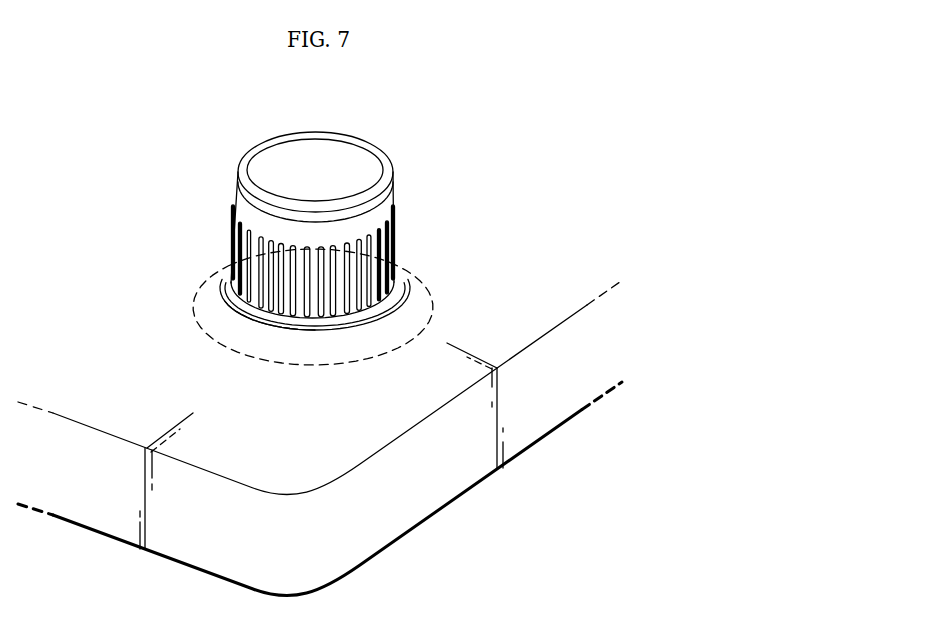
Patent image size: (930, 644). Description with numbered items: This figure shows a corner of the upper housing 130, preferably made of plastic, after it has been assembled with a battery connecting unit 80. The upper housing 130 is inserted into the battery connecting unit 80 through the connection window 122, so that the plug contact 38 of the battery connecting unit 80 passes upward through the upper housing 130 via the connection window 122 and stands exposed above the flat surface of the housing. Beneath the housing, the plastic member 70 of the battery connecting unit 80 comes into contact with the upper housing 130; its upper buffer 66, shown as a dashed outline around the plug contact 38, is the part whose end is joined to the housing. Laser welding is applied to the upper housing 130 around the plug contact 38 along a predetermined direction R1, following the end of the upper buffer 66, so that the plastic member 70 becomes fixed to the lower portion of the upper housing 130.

The plug contact 38 is at (318, 205).
The battery connecting unit 80 is at (345, 155).
The upper buffer 66 is at (280, 287).
The plastic member 70 is at (197, 278).
The connection window 122 is at (400, 291).
The predetermined direction R1 is at (316, 332).
The upper housing 130 is at (120, 397).